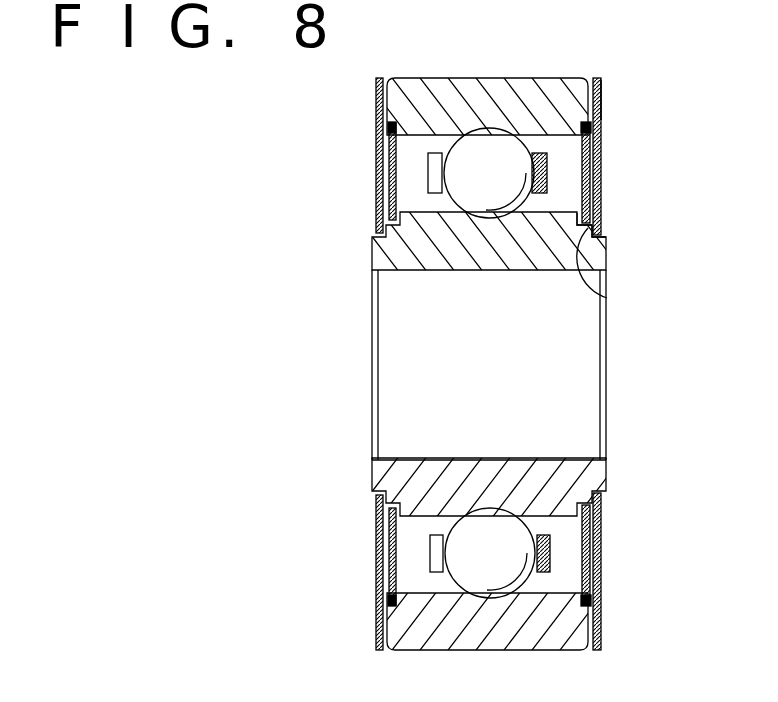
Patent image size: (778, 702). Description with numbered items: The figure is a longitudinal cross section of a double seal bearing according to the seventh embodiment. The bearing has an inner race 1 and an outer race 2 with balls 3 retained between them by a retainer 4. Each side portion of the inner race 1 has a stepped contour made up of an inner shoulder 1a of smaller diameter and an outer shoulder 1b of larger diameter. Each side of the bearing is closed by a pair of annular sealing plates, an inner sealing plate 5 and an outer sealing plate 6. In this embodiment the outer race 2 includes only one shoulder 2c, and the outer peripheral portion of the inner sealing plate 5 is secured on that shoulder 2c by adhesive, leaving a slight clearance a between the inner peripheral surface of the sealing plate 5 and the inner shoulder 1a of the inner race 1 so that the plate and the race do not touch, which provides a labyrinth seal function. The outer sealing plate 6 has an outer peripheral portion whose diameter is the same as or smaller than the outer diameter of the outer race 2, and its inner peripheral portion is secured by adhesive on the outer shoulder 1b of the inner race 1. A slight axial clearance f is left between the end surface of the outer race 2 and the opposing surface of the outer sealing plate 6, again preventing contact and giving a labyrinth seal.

The inner race 1 is at (372, 250).
The inner shoulder 1a is at (603, 210).
The outer shoulder 1b is at (610, 232).
The outer race 2 is at (407, 78).
The shoulder 2c is at (601, 138).
The balls 3 is at (477, 210).
The retainer 4 is at (543, 192).
The inner sealing plate 5 is at (601, 158).
The outer sealing plate 6 is at (601, 176).
The axial clearance f is at (601, 103).
The clearance a is at (607, 298).